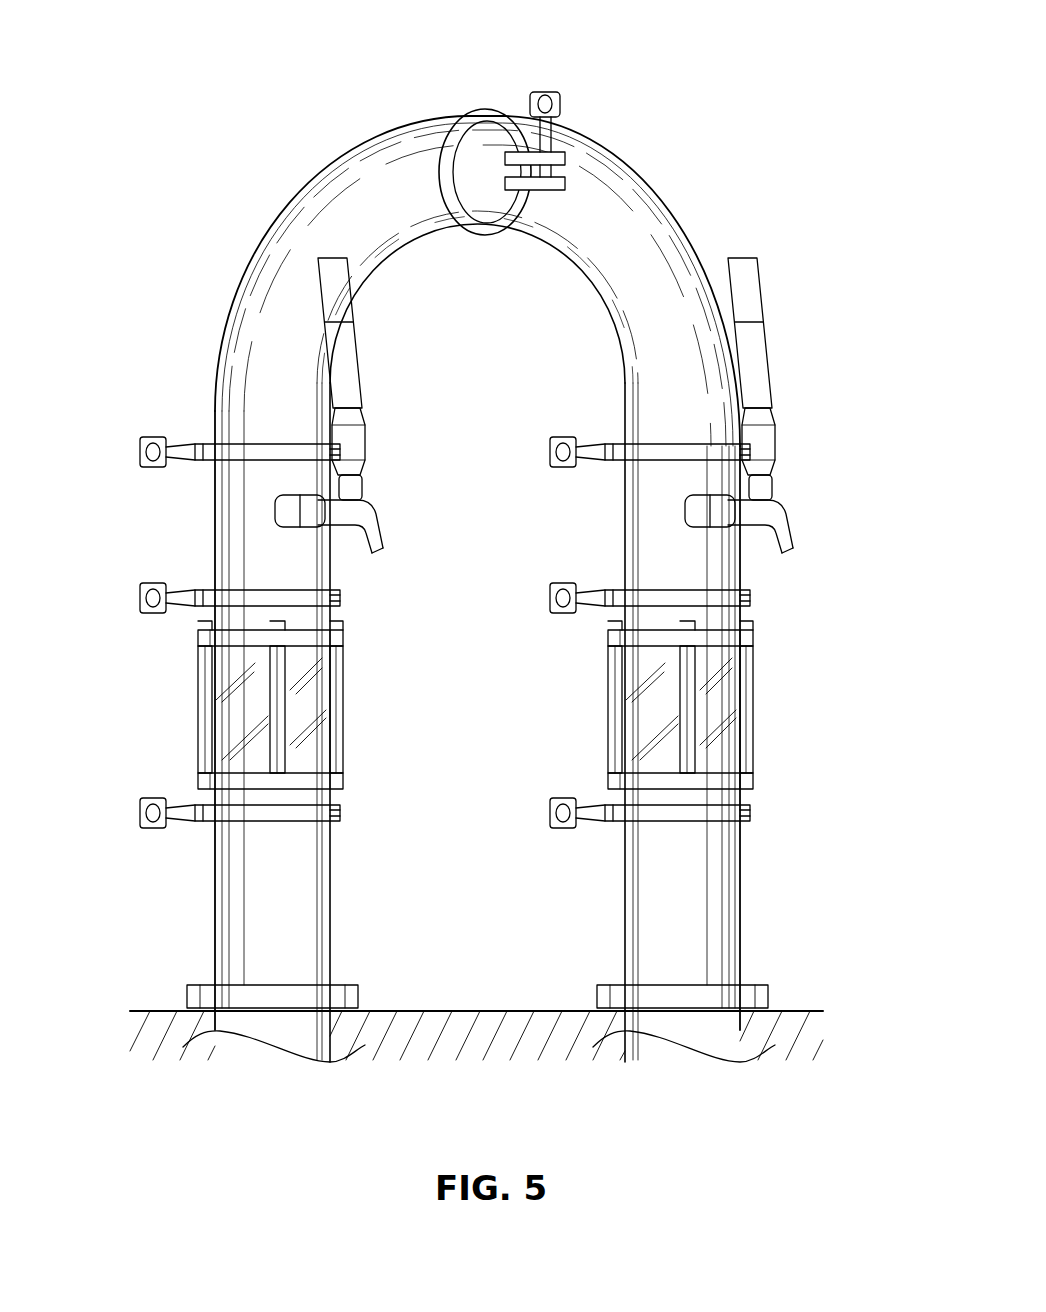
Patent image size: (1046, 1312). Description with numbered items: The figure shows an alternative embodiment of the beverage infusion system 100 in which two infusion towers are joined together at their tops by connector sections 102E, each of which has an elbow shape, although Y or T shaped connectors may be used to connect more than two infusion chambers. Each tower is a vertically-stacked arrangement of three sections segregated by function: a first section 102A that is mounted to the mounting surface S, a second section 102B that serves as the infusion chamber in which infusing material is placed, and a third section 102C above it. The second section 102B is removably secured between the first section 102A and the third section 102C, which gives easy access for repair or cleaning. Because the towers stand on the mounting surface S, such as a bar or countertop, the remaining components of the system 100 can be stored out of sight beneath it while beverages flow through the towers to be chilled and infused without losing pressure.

The beverage infusion system 100 is at (630, 70).
The first section 102A is at (214, 921).
The second section 102B is at (196, 706).
The third section 102C is at (236, 570).
The connector section 102E is at (297, 188).
The mounting surface S is at (473, 1011).